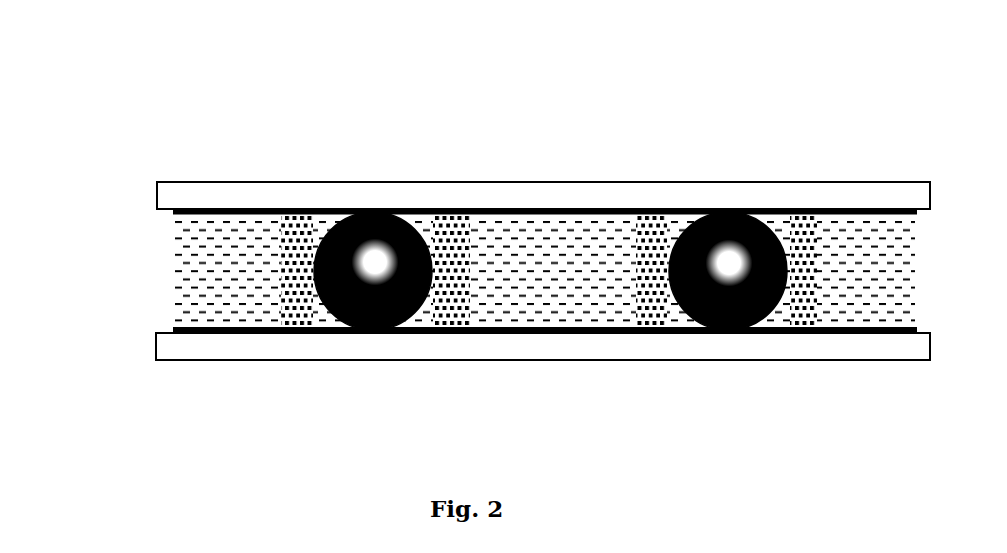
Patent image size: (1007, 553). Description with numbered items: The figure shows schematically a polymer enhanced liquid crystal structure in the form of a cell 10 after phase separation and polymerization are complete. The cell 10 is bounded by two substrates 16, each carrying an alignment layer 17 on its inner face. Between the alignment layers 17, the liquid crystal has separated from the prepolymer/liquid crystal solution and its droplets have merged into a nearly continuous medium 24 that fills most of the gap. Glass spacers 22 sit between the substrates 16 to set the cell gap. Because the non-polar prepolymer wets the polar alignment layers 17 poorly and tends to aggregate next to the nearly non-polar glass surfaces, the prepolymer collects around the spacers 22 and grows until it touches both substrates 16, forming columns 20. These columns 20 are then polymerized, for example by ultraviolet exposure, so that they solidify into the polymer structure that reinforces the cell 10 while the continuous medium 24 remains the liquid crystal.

The cell 10 is at (158, 108).
The substrates 16 is at (192, 190).
The alignment layers 17 is at (185, 328).
The columns 20 is at (310, 242).
The spacers 22 is at (382, 290).
The continuous medium 24 is at (535, 250).